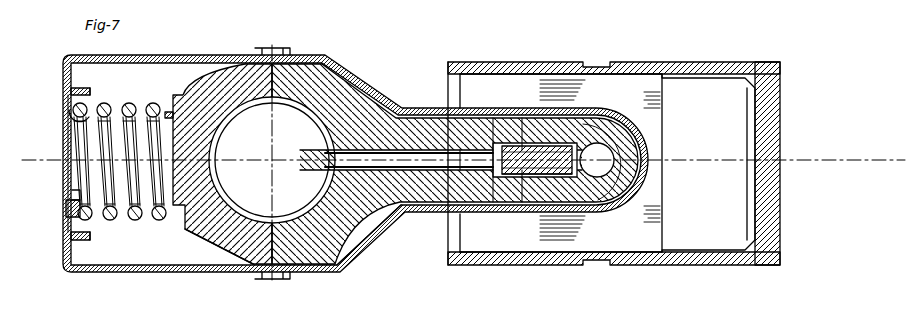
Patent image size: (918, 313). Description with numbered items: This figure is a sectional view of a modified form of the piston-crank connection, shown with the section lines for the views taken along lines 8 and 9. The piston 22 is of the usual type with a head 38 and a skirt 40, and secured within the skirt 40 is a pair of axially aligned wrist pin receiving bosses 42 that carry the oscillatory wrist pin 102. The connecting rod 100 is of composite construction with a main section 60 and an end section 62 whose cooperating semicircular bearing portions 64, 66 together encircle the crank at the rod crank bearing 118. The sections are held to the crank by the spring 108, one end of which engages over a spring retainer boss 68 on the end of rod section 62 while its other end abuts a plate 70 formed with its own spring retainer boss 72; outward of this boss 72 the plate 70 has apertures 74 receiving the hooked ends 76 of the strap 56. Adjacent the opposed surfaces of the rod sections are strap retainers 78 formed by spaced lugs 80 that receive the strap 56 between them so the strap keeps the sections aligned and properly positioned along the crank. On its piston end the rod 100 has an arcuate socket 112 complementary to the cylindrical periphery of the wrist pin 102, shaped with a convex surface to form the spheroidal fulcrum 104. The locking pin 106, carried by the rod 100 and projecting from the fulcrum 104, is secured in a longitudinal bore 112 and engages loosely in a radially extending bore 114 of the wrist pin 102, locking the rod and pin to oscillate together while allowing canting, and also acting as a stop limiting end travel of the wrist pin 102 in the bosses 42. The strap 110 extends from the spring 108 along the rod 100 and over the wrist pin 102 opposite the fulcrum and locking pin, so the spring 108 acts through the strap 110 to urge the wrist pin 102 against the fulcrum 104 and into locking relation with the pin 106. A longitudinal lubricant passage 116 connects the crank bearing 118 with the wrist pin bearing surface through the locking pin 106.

The piston 22 is at (507, 60).
The head 38 is at (775, 266).
The skirt 40 is at (474, 266).
The wrist pin receiving bosses 42 is at (664, 228).
The straps 56 is at (403, 216).
The main section 60 is at (326, 112).
The end section 62 is at (186, 226).
The semicircular bearing portion 64 is at (322, 200).
The semicircular bearing portion 66 is at (222, 148).
The spring retainer boss 68 is at (166, 114).
The plate 70 is at (66, 210).
The spring retainer boss 72 is at (78, 193).
The apertures 74 is at (71, 91).
The hooked ends 76 is at (92, 90).
The strap retainers 78 is at (263, 48).
The lugs 80 is at (272, 279).
The connecting rod 100 is at (388, 112).
The oscillatory wrist pin 102 is at (664, 180).
The fulcrum member 104 is at (534, 192).
The locking pin 106 is at (526, 143).
The spring 108 is at (114, 219).
The strap 110 is at (212, 42).
The arcuate socket 112 is at (493, 143).
The radially extending bore 114 is at (580, 160).
The lubricant passage 116 is at (462, 173).
The rod crank bearing 118 is at (330, 162).
The section line 8- 8 is at (785, 144).
The section line 9- 9 is at (598, 92).